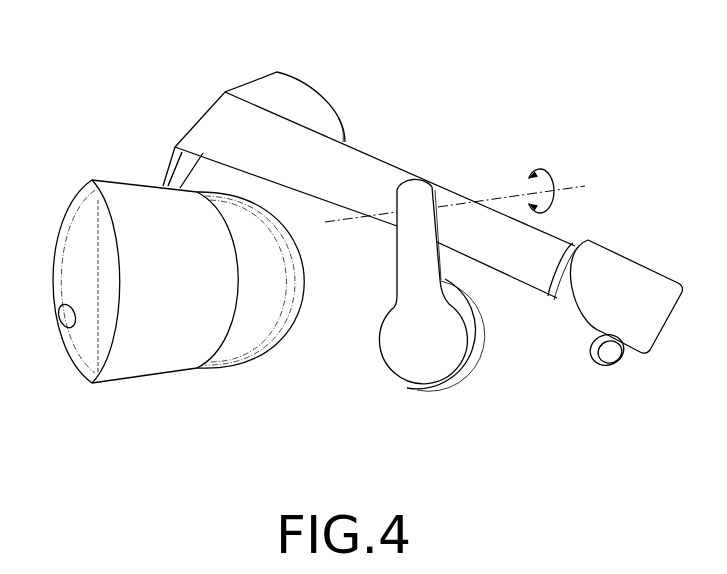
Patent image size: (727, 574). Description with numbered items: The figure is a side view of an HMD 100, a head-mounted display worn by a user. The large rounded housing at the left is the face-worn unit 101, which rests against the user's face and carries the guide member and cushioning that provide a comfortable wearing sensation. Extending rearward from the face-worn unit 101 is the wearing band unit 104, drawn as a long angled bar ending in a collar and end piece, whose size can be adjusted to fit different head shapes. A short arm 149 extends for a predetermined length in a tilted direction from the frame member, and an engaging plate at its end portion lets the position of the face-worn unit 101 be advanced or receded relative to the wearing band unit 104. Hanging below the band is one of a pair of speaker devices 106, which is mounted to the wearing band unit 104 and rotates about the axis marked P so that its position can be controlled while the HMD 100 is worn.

The HMD 100 is at (118, 67).
The face-worn unit 101 is at (158, 377).
The wearing band unit 104 is at (390, 155).
The speaker device 106 is at (487, 368).
The arm 149 is at (182, 165).